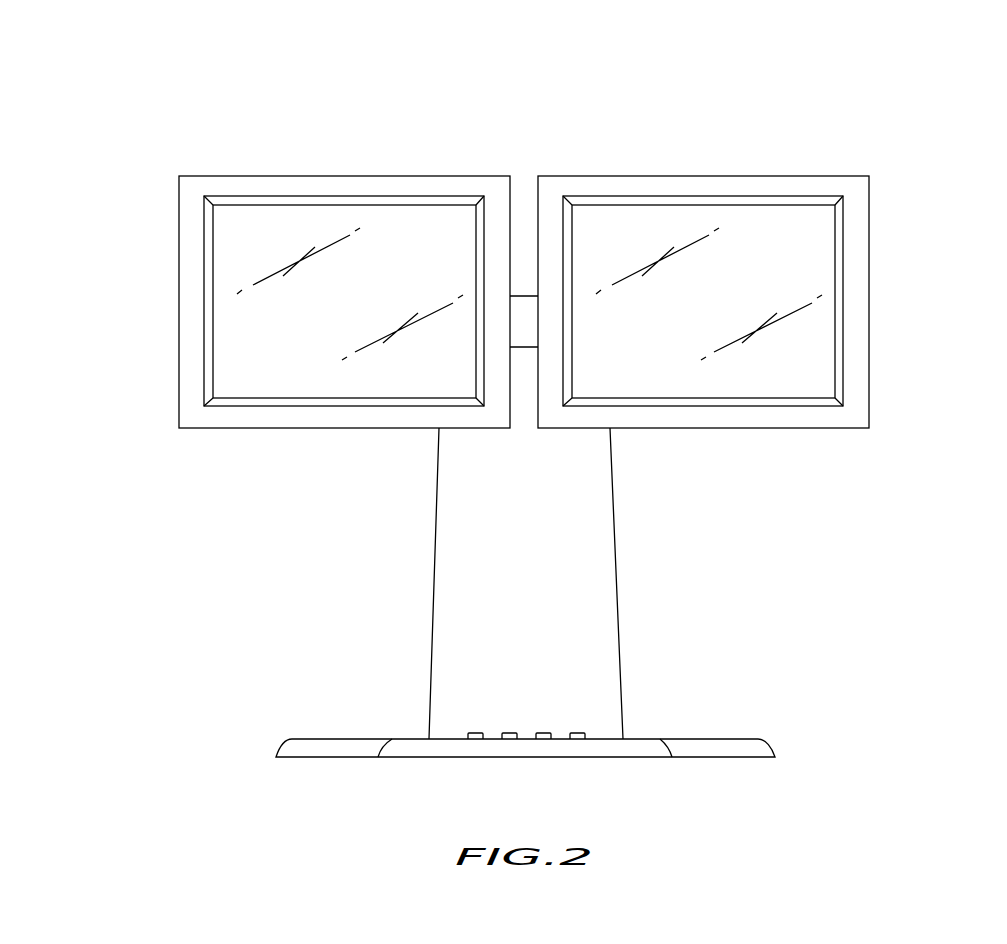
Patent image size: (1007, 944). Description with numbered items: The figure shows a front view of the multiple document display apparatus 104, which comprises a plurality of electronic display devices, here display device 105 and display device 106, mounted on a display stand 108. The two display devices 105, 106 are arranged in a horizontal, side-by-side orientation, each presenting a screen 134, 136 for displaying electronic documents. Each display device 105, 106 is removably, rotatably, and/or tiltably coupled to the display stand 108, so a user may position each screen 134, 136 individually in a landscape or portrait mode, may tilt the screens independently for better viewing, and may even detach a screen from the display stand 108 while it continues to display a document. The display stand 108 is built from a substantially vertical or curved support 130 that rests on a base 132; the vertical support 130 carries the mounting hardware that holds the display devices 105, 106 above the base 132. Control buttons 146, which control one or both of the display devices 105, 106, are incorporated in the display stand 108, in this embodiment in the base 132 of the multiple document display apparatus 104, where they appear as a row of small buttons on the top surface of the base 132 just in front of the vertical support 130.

The multiple document display apparatus 104 is at (478, 126).
The display device 105 is at (240, 176).
The display device 106 is at (782, 176).
The display stand 108 is at (500, 592).
The vertical support 130 is at (617, 526).
The base 132 is at (735, 739).
The screen 134 is at (232, 357).
The screen 136 is at (817, 352).
The control buttons 146 is at (596, 705).